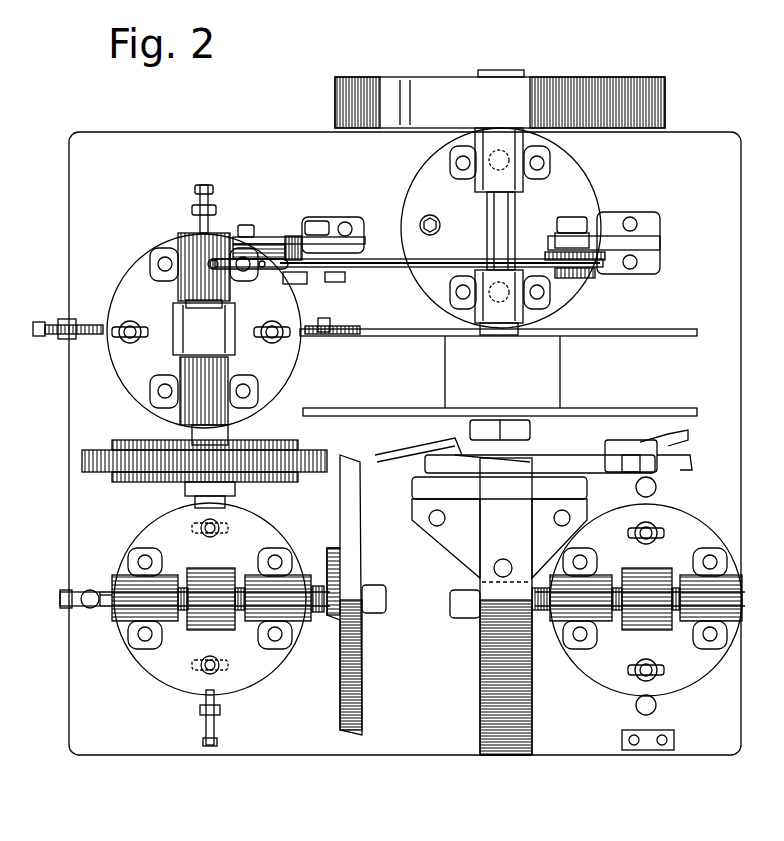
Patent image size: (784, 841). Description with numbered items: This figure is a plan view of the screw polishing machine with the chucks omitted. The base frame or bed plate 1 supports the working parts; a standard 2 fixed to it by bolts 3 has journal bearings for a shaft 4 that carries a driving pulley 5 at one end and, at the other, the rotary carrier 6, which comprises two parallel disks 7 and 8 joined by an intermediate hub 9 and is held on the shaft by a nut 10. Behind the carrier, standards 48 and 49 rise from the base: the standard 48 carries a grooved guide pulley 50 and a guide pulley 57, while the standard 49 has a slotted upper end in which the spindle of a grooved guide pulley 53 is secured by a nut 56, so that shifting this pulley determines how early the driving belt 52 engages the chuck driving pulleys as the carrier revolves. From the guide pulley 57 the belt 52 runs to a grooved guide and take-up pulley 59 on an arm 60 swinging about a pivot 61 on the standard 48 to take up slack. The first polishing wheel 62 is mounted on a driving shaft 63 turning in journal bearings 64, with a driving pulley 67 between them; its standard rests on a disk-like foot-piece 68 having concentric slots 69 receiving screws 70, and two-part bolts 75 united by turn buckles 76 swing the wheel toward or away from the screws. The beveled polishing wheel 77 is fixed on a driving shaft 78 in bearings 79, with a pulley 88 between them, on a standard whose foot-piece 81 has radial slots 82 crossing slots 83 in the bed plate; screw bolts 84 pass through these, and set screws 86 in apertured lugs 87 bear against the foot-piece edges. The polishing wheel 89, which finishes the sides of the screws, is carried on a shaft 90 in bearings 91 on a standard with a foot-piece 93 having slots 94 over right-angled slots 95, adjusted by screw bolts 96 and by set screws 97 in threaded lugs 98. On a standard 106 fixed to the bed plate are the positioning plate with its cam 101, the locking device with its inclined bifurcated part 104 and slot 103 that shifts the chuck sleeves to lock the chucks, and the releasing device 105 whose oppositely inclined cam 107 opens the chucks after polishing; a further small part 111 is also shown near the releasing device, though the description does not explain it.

The base frame or bed plate 1 is at (405, 443).
The standard 2 is at (501, 228).
The bolts 3 is at (436, 221).
The shaft 4 is at (510, 238).
The driving pulley 5 is at (660, 101).
The rotary carrier 6 is at (575, 372).
The disk 7 is at (660, 329).
The disk 8 is at (665, 408).
The hub 9 is at (461, 372).
The nut 10 is at (522, 436).
The standard 48 is at (362, 270).
The standard 49 is at (658, 248).
The grooved guide pulley 50 is at (282, 259).
The driving belt 52 is at (210, 268).
The grooved guide pulley 53 is at (600, 276).
The nut 56 is at (570, 224).
The guide pulley 57 is at (362, 262).
The grooved guide and take-up pulley 59 is at (234, 237).
The arm 60 is at (262, 237).
The pivot 61 is at (318, 222).
The polishing wheel 62 is at (500, 606).
The driving shaft 63 is at (614, 576).
The journal bearings 64 is at (706, 588).
The driving pulley 67 is at (650, 570).
The disk-like foot-piece 68 is at (598, 680).
The slots 69 is at (660, 528).
The screws 70 is at (640, 526).
The two-part bolt 75 is at (665, 735).
The turn buckle 76 is at (660, 490).
The beveled polishing wheel 77 is at (352, 543).
The driving shaft 78 is at (241, 612).
The bearings 79 is at (122, 602).
The disk-like foot-piece 81 is at (210, 599).
The radial slots 82 is at (210, 632).
The slots 83 is at (226, 527).
The screw bolts 84 is at (198, 603).
The set screws 86 is at (107, 588).
The apertured lugs 87 is at (85, 590).
The pulley 88 is at (196, 610).
The polishing wheel 89 is at (90, 452).
The shaft 90 is at (226, 358).
The bearings 91 is at (192, 258).
The foot-piece or disk 93 is at (204, 331).
The slots 94 is at (130, 321).
The slots 95 is at (202, 344).
The screw bolts 96 is at (222, 308).
The set screws 97 is at (92, 324).
The threaded lugs 98 is at (62, 320).
The inclined face or cam 101 is at (692, 456).
The slot 103 is at (630, 440).
The inclined part 104 is at (680, 432).
The releasing device 105 is at (526, 465).
The standard 106 is at (499, 527).
The cam or inclined face 107 is at (418, 443).
The pin 111 is at (492, 448).